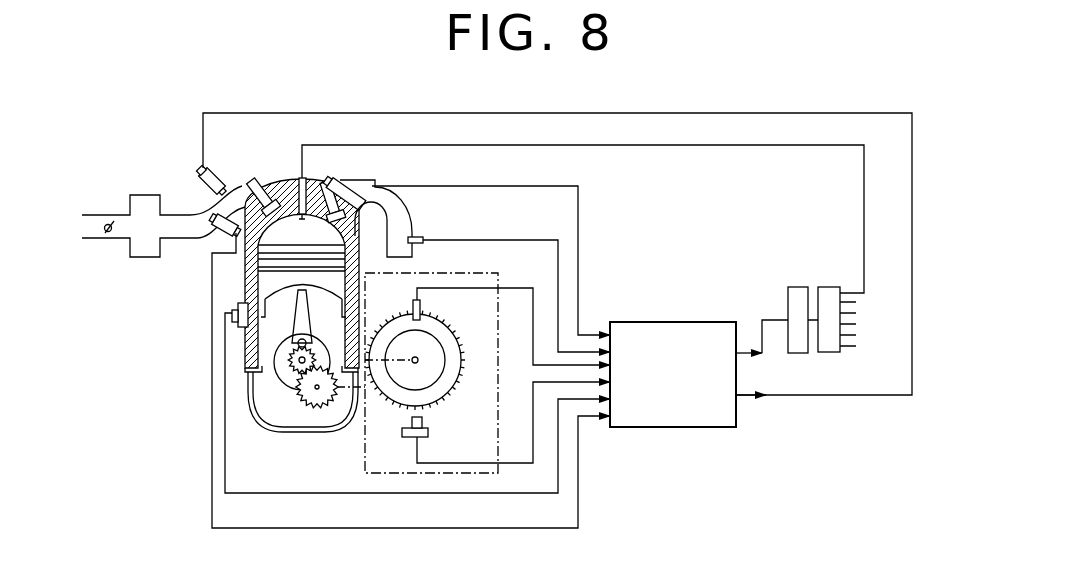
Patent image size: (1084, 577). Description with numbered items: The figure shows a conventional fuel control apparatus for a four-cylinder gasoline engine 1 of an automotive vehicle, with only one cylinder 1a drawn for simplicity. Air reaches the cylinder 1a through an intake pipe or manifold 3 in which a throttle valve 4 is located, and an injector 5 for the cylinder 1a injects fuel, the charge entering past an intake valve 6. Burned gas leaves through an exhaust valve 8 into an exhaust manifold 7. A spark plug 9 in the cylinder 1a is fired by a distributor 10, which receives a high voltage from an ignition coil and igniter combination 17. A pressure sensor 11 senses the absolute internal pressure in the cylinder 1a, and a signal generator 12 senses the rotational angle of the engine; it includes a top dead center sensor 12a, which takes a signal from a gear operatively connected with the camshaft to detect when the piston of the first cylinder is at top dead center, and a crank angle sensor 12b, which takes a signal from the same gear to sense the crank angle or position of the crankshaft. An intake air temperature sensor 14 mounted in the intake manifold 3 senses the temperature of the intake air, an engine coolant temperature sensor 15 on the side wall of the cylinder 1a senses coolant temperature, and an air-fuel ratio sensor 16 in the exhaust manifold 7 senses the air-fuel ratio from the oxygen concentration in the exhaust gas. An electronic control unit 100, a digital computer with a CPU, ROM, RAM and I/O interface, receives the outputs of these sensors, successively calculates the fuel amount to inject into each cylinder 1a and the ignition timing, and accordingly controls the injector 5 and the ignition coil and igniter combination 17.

The engine 1 is at (279, 426).
The cylinder 1a is at (357, 280).
The intake pipe or manifold 3 is at (189, 213).
The throttle valve 4 is at (105, 232).
The injector 5 is at (213, 174).
The intake valve 6 is at (250, 177).
The exhaust manifold 7 is at (391, 217).
The exhaust valve 8 is at (373, 178).
The spark plug 9 is at (299, 186).
The distributor 10 is at (826, 287).
The pressure sensor 11 is at (326, 188).
The signal generator 12 is at (432, 272).
The top dead center sensor 12a is at (421, 311).
The crank angle sensor 12b is at (428, 434).
The intake air temperature sensor 14 is at (217, 234).
The engine coolant temperature sensor 15 is at (238, 326).
The air-fuel ratio sensor 16 is at (423, 239).
The ignition coil and igniter combination 17 is at (792, 287).
The electronic control unit 100 is at (692, 298).